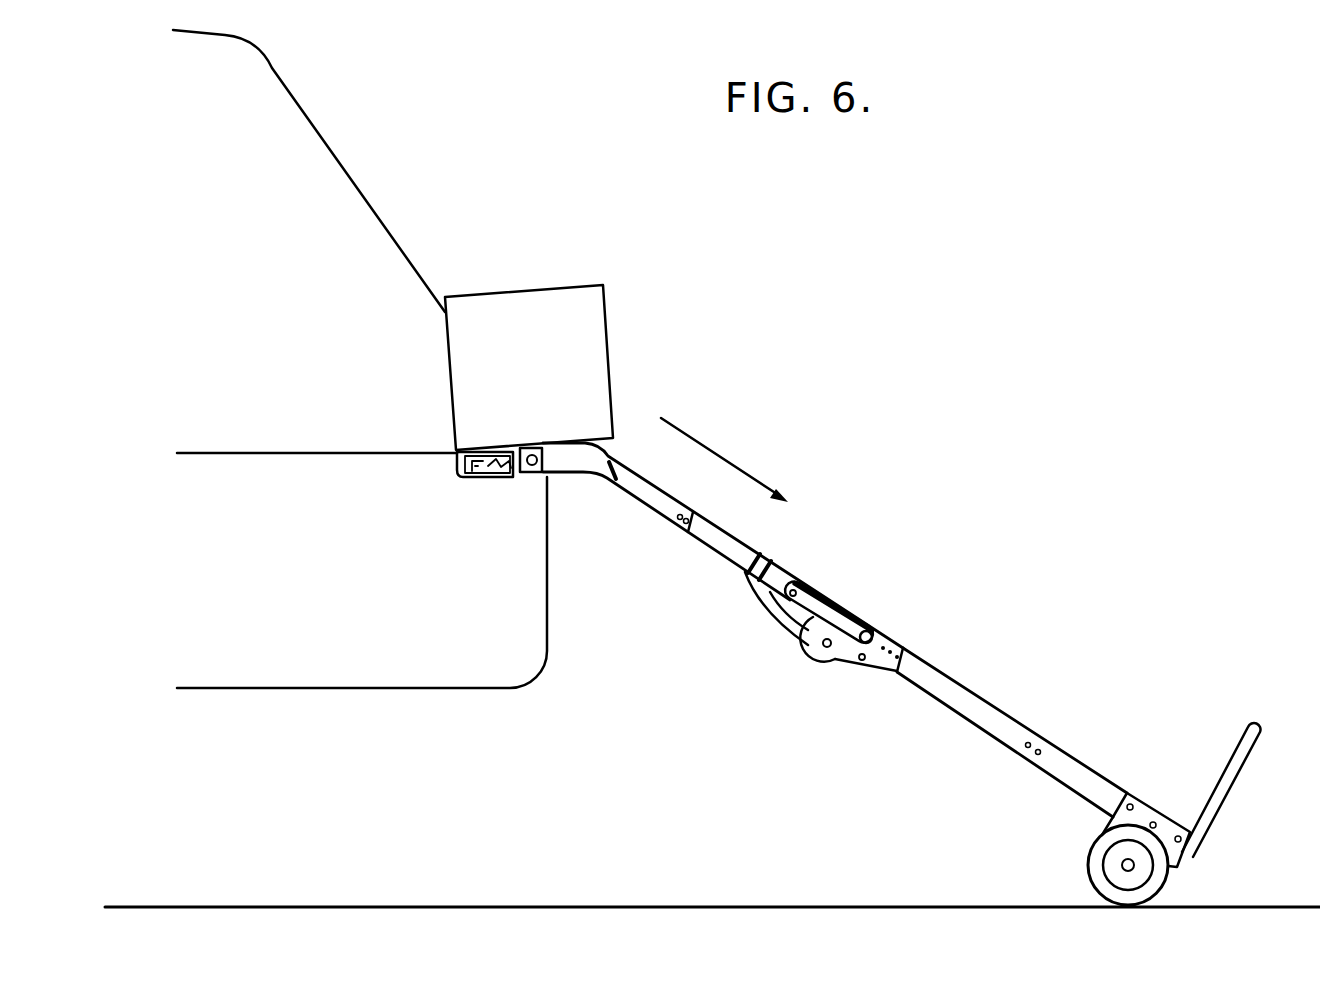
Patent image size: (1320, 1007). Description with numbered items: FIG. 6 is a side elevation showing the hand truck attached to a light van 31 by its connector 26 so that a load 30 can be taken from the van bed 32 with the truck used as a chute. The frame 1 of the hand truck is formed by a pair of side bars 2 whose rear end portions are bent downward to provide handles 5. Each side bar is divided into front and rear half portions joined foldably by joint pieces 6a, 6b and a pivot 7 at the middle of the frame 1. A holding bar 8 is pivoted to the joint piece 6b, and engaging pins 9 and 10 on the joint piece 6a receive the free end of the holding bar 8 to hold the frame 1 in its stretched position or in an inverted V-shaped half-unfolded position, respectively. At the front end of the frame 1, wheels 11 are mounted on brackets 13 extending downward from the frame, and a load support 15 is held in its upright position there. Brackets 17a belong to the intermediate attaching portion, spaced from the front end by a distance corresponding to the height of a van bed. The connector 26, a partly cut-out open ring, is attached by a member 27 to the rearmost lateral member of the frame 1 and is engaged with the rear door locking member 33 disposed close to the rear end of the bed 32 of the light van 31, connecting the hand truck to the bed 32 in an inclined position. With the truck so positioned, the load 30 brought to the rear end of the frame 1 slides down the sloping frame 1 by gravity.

The frame 1 is at (991, 700).
The side bars 2 is at (1052, 750).
The handles 5 is at (485, 449).
The joint piece 6a is at (883, 671).
The joint piece 6b is at (802, 640).
The pivot 7 is at (817, 650).
The holding bar 8 is at (822, 600).
The engaging pin 9 is at (862, 622).
The engaging pin 10 is at (858, 663).
The wheels 11 is at (1090, 863).
The brackets 13 is at (1175, 853).
The load support 15 is at (1236, 745).
The brackets 17a is at (758, 605).
The connector 26 is at (510, 474).
The member 27 is at (512, 450).
The load 30 is at (567, 285).
The light van 31 is at (373, 208).
The bed 32 is at (316, 452).
The locking member 33 is at (472, 474).